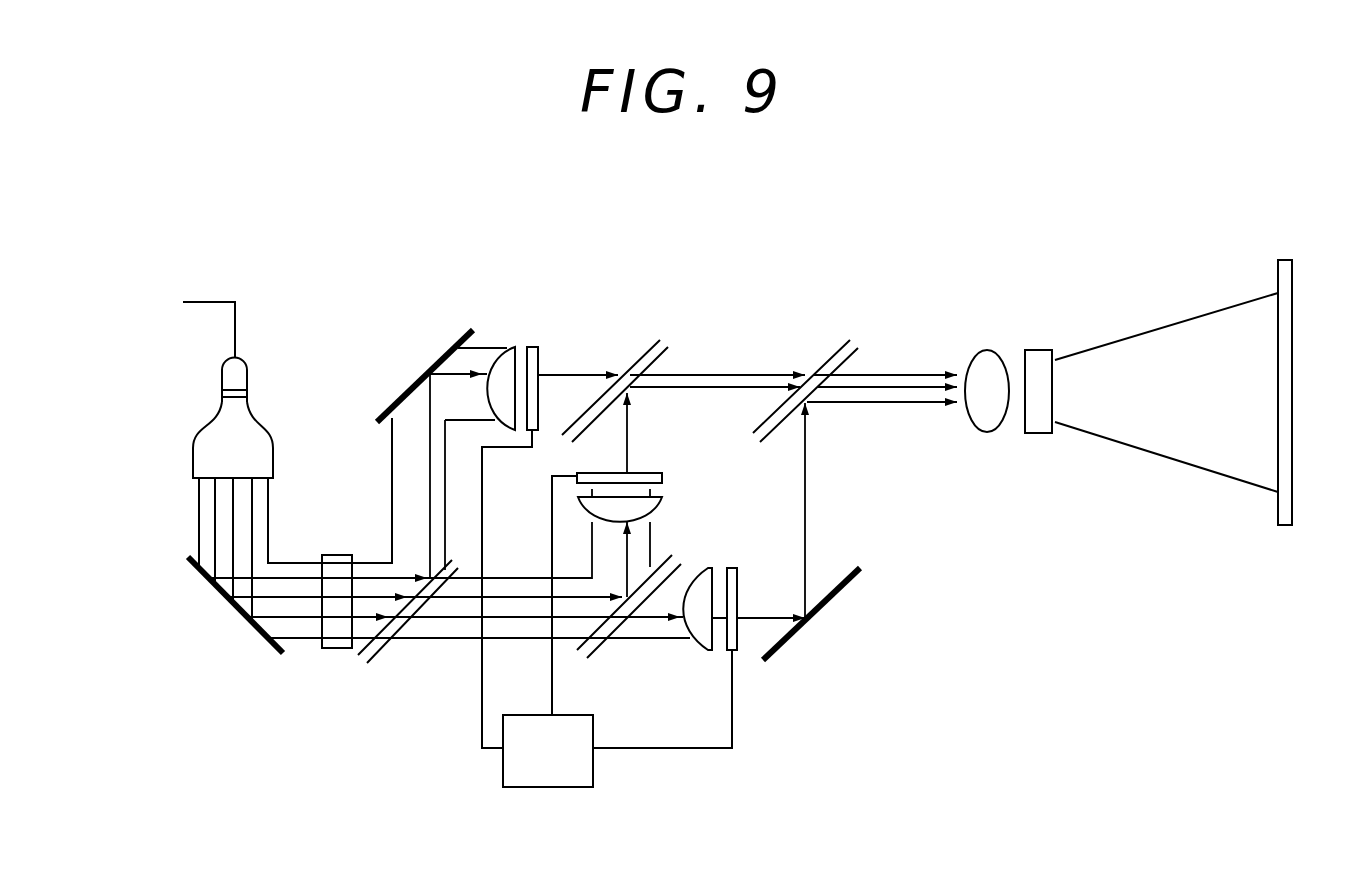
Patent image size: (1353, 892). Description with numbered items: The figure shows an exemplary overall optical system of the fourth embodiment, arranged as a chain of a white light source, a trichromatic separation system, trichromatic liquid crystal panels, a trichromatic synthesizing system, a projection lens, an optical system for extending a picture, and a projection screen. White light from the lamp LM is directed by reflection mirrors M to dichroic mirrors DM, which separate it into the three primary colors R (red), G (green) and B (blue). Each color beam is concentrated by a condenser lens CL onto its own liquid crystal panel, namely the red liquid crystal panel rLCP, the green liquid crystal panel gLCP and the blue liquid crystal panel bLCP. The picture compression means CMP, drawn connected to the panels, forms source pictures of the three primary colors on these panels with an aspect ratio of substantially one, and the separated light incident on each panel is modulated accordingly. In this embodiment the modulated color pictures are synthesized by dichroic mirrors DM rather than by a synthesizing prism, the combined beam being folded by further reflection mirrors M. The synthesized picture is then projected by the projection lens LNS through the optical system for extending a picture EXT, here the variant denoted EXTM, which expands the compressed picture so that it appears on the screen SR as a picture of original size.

The lamp LM is at (197, 433).
The reflection mirrors M is at (242, 613).
The dichroic mirrors DM is at (378, 648).
The condenser lens CL is at (510, 347).
The green liquid crystal panel gLCP is at (532, 347).
The blue liquid crystal panel bLCP is at (642, 473).
The red liquid crystal panel rLCP is at (740, 643).
The green light G is at (455, 462).
The blue light B is at (621, 495).
The red light R is at (733, 512).
The projection lens LNS is at (980, 350).
The optical system for extending a picture EXT is at (1045, 350).
The screen SR is at (1285, 260).
The picture compression means CMP is at (593, 768).